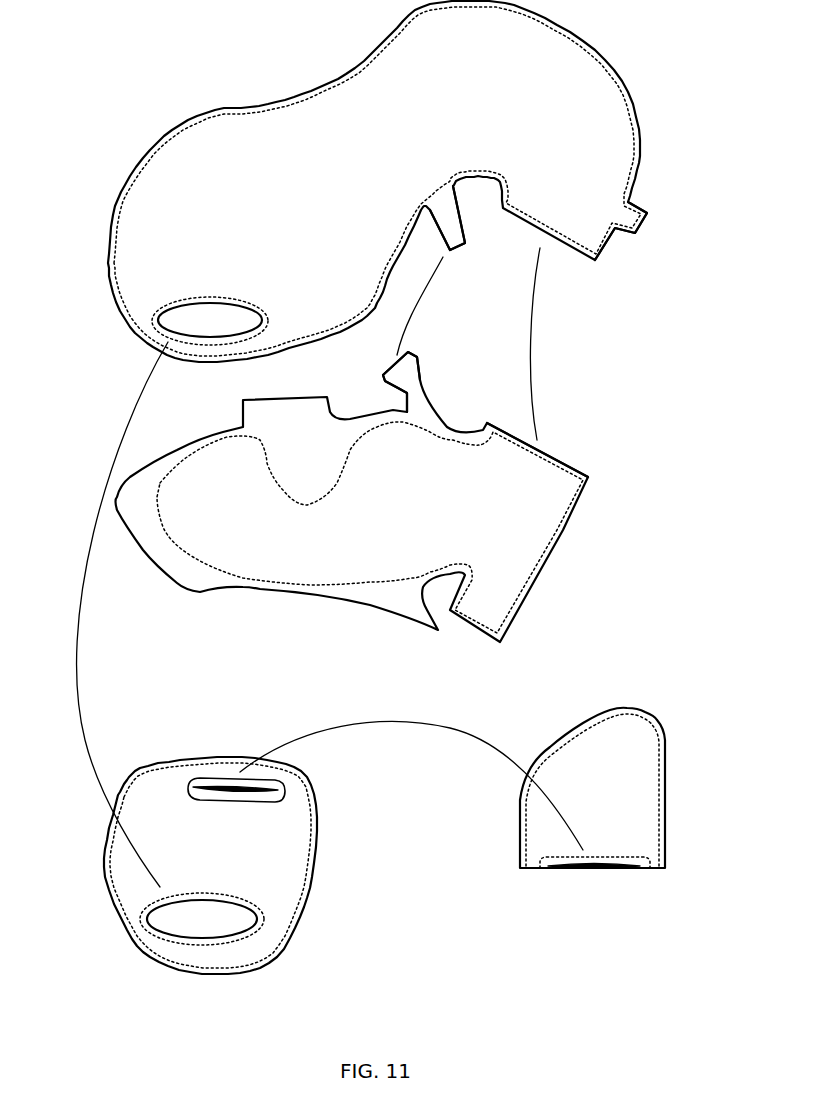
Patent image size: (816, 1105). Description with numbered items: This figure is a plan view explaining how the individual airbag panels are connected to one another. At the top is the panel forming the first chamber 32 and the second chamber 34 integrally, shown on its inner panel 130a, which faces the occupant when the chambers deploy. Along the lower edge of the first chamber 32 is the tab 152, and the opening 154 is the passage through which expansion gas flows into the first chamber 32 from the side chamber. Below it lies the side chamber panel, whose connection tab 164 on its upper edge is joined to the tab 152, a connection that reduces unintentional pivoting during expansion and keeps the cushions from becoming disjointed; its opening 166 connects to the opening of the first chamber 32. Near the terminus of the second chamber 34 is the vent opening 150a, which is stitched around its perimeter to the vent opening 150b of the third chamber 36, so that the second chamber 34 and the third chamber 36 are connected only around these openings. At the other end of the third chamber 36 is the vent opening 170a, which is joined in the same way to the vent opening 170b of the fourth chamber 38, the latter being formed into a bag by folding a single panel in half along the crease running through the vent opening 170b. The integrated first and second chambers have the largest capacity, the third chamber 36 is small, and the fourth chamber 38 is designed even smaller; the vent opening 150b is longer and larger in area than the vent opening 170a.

The first chamber 32 is at (346, 182).
The inner panel 130a is at (180, 172).
The vent opening 150a is at (157, 323).
The tab 152 is at (460, 250).
The opening 154 is at (578, 257).
The second chamber 34 is at (372, 497).
The connection tab 164 is at (412, 368).
The opening 166 is at (557, 458).
The third chamber 36 is at (239, 863).
The vent opening 170a is at (205, 790).
The vent opening 150b is at (217, 933).
The fourth chamber 38 is at (622, 763).
The vent opening 170b is at (620, 863).